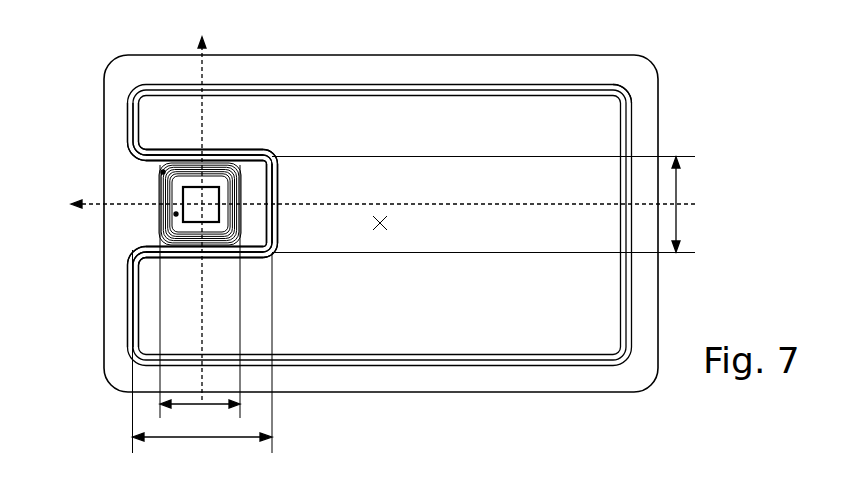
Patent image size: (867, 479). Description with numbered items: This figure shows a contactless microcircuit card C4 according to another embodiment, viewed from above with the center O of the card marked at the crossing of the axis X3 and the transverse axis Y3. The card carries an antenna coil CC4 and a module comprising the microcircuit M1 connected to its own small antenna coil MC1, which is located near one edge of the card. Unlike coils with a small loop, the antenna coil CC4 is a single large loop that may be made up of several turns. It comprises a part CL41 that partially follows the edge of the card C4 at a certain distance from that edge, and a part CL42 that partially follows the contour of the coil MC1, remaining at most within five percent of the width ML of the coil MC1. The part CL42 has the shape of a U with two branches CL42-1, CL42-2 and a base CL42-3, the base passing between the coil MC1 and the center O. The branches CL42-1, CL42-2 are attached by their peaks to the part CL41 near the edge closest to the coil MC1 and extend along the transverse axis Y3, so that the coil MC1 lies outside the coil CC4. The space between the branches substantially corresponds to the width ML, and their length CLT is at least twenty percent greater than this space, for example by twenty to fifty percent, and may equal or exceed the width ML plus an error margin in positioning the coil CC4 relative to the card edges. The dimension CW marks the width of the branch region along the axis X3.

The contactless microcircuit card C4 is at (105, 89).
The part of the antenna coil following the edge of the card CL41 is at (485, 90).
The part of the antenna coil following the contour of the coil MC1 CL42 is at (281, 262).
The branch of the U-shaped part CL42-1 is at (228, 156).
The branch of the U-shaped part CL42-2 is at (172, 253).
The base of the U-shaped part CL42-3 is at (273, 198).
The antenna coil CC4 is at (632, 85).
The microcircuit M1 is at (175, 215).
The antenna coil of the module MC1 is at (162, 172).
The transverse axis of the card Y3 is at (201, 207).
The X axis X3 is at (366, 202).
The center of the card O is at (380, 234).
The coil width CW is at (494, 205).
The width of the coil MC1 ML is at (200, 299).
The length of the branches CLT is at (203, 357).